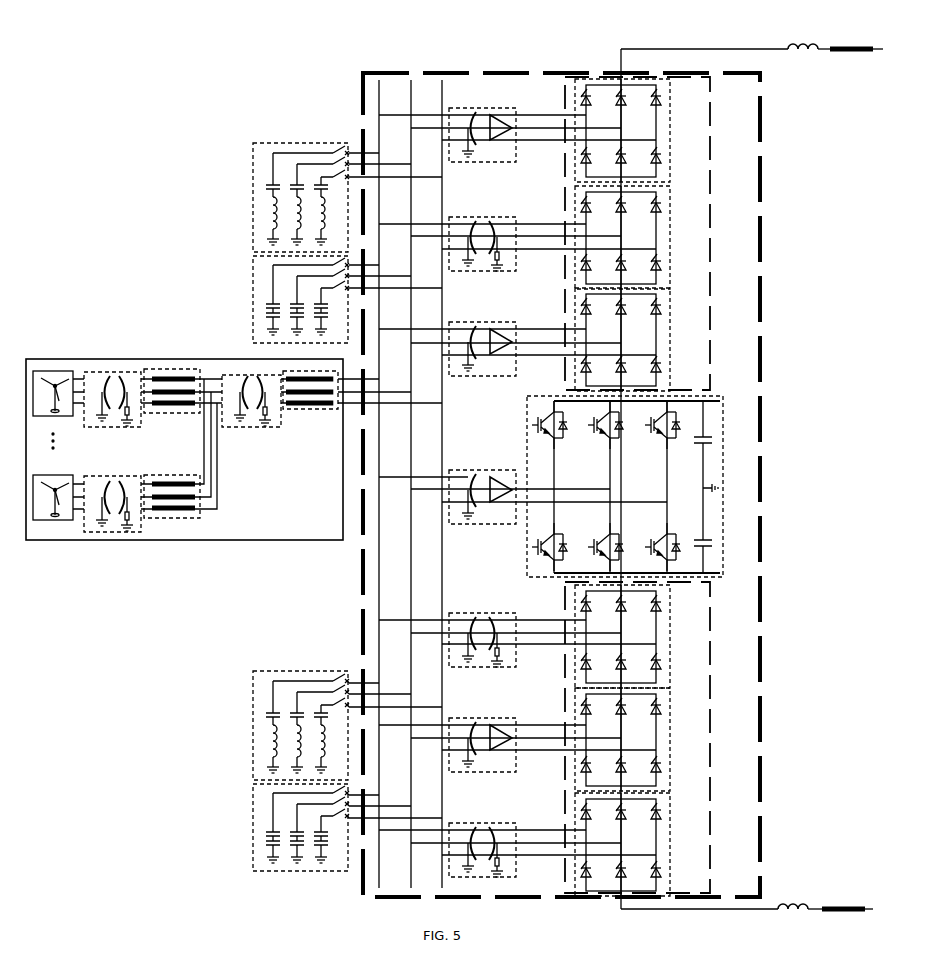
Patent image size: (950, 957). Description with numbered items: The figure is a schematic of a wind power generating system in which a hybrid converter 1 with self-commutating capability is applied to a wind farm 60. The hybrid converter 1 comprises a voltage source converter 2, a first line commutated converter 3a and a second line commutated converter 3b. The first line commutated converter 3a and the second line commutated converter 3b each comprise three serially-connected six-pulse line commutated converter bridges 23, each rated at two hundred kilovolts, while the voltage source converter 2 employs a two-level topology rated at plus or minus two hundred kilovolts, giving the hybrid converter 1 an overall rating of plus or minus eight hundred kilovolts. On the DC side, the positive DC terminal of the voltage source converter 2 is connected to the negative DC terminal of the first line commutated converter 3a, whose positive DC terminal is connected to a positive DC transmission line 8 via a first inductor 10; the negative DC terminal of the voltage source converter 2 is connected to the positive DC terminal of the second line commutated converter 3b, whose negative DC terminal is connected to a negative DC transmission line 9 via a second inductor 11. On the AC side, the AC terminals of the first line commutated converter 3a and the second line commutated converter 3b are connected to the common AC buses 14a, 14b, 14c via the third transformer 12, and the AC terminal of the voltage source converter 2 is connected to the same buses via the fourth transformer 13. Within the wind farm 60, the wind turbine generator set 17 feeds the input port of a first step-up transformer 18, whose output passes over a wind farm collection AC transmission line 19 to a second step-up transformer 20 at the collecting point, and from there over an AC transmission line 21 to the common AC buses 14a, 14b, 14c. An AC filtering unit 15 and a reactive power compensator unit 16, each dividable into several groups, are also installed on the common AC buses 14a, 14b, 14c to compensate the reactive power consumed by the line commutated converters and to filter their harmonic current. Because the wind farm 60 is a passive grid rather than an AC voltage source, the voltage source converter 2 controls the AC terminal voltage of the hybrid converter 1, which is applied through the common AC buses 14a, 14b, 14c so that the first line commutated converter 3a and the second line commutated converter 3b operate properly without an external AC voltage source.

The hybrid converter 1 is at (762, 432).
The voltage source converter 2 is at (724, 542).
The first line commutated converter 3a is at (712, 176).
The second line commutated converter 3b is at (712, 680).
The positive DC transmission line 8 is at (856, 53).
The negative DC transmission line 9 is at (840, 905).
The first inductor 10 is at (803, 54).
The second inductor 11 is at (791, 905).
The third transformer 12 is at (462, 108).
The fourth transformer 13 is at (462, 470).
The common AC bus 14a is at (377, 578).
The common AC bus 14b is at (410, 594).
The common AC bus 14c is at (441, 610).
The AC filter 15 is at (252, 188).
The reactive power compensator 16 is at (252, 290).
The wind turbine generator set 17 is at (58, 416).
The first step-up transformer 18 is at (112, 428).
The AC transmission line 19 is at (188, 423).
The second step-up transformer 20 is at (236, 428).
The AC transmission line 21 is at (316, 409).
The six-pulse line commutated converter bridge 23 is at (672, 114).
The wind farm 60 is at (184, 463).